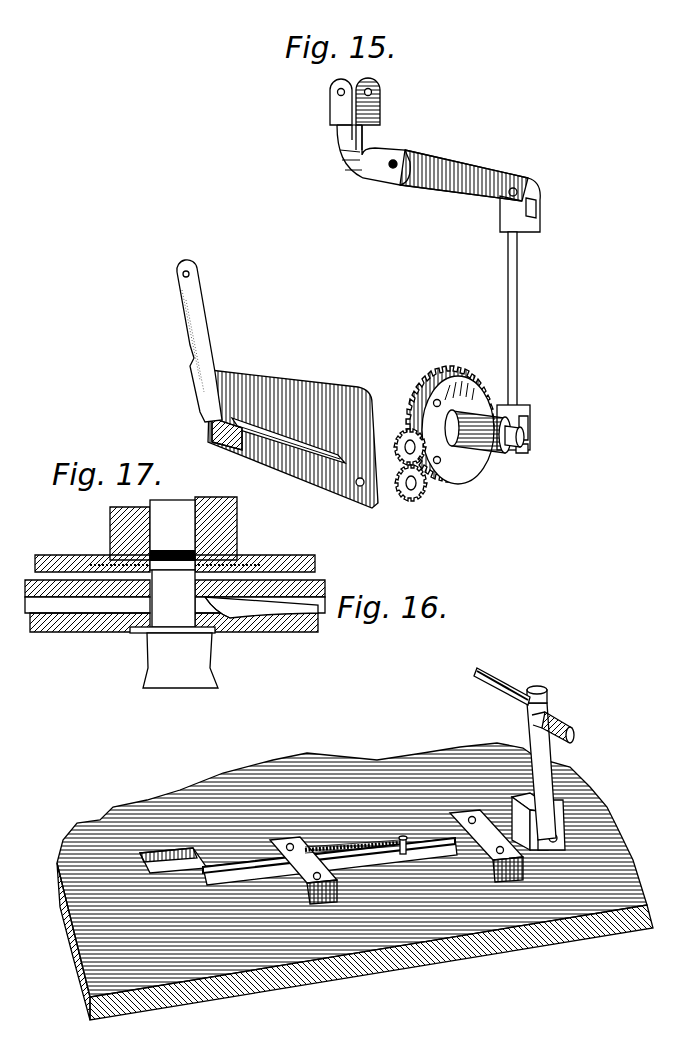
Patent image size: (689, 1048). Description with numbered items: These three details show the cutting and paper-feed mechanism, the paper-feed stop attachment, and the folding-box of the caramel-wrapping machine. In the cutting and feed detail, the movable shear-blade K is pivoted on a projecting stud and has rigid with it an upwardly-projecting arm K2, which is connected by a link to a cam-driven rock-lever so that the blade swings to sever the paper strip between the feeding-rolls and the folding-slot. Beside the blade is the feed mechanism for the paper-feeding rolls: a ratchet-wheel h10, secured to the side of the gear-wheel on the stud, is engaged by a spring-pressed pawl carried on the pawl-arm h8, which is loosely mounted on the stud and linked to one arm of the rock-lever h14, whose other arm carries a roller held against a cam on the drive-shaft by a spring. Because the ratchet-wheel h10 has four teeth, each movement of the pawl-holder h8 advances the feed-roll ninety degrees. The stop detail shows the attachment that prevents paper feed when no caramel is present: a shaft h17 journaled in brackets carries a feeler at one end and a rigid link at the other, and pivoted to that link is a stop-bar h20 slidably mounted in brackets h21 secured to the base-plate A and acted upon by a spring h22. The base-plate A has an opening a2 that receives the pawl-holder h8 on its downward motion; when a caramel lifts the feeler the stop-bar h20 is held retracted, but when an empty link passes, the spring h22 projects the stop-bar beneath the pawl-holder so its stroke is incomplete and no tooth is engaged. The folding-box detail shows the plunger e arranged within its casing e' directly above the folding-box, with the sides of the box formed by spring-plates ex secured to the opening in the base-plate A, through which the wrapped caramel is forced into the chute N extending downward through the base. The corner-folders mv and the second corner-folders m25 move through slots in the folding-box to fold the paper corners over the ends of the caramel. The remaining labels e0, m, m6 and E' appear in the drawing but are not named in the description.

In FIG. 15, the movable shear-blade K is at (290, 387).
In FIG. 15, the upwardly-projecting arm K2 is at (203, 340).
In FIG. 15, the ratchet-wheel h10 is at (450, 382).
In FIG. 15, the pawl-arm h8 is at (520, 450).
In FIG. 17, the plunger e is at (172, 535).
In FIG. 17, the cross piece e0 is at (170, 560).
In FIG. 17, the plunger-casing e' is at (188, 528).
In FIG. 17, the upper plate m is at (272, 560).
In FIG. 17, the middle plate m6 is at (60, 580).
In FIG. 17, the second corner-folders m25 is at (85, 605).
In FIG. 17, the corner-folders mv is at (287, 612).
In FIG. 17, the flange E' is at (152, 643).
In FIG. 17, the spring-plates ex is at (172, 592).
In FIG. 17, the chute N is at (180, 660).
In FIG. 16, the base-plate A is at (355, 881).
In FIG. 16, the opening a2 is at (175, 865).
In FIG. 16, the stop-bar h20 is at (440, 848).
In FIG. 16, the brackets h21 is at (318, 902).
In FIG. 16, the spring h22 is at (353, 840).
In FIG. 16, the rock-lever h14 is at (565, 775).
In FIG. 16, the shaft h17 is at (515, 682).